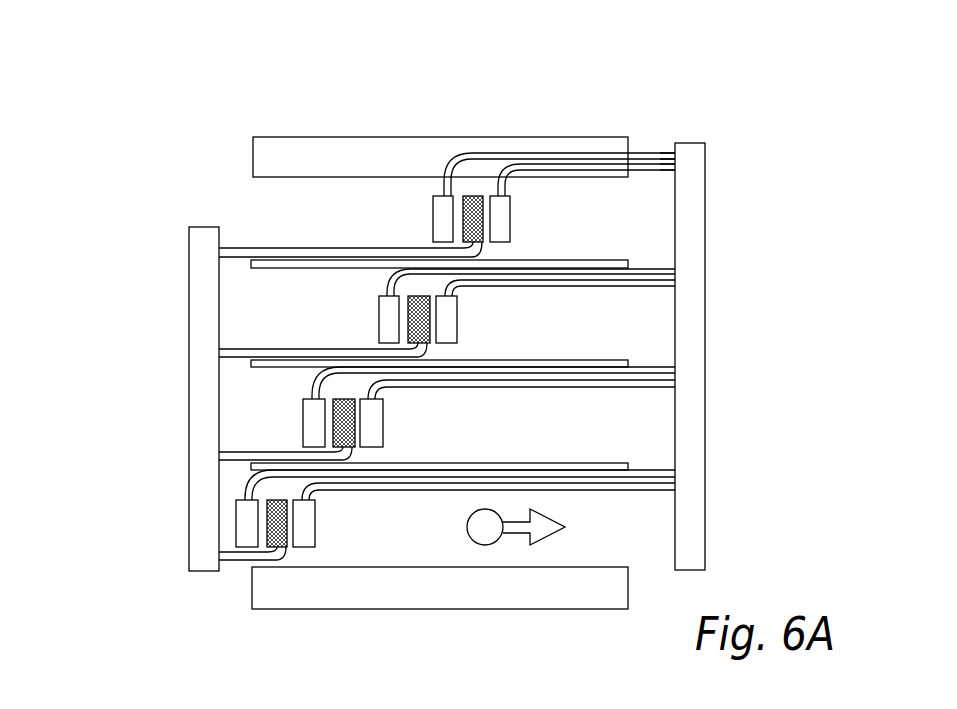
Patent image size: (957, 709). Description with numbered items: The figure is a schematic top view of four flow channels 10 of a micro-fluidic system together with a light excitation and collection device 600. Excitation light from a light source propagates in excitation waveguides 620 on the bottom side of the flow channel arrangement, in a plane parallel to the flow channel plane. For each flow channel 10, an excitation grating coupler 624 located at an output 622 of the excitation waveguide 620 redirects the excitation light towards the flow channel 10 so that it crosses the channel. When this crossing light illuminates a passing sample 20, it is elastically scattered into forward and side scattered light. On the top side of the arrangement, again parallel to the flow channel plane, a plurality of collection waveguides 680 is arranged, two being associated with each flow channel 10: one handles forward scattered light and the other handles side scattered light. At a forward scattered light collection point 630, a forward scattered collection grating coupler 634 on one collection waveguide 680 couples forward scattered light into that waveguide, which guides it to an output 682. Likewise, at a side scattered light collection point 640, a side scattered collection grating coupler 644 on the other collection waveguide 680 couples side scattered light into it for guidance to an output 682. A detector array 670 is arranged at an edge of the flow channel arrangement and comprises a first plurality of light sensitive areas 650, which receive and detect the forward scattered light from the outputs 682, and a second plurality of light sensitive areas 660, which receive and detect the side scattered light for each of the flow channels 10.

The light excitation and collection device 600 is at (163, 110).
The flow channels 10 is at (302, 219).
The passing sample 20 is at (485, 535).
The excitation waveguide 620 is at (230, 558).
The output of the excitation waveguide 622 is at (284, 577).
The excitation grating coupler 624 is at (285, 550).
The forward scattered light collection point 630 is at (571, 122).
The forward scattered collection grating coupler 634 is at (502, 217).
The side scattered light collection point 640 is at (390, 142).
The side scattered collection grating coupler 644 is at (438, 222).
The first plurality of light sensitive areas 650 is at (677, 165).
The second plurality of light sensitive areas 660 is at (677, 155).
The detector array 670 is at (687, 368).
The collection waveguides 680 is at (443, 191).
The output of the collection waveguide 682 is at (667, 150).